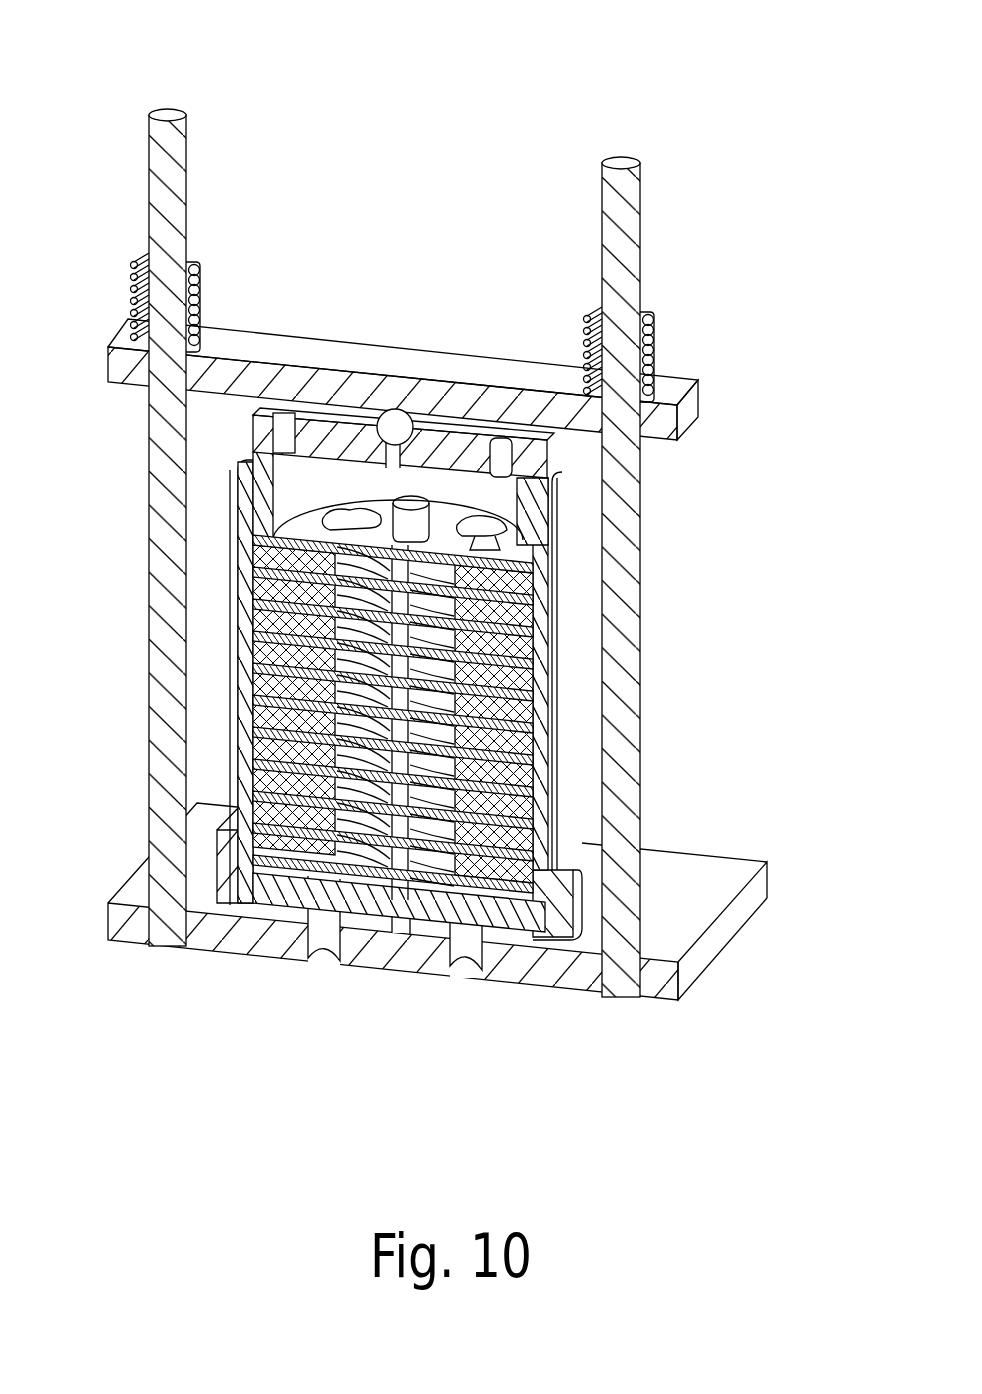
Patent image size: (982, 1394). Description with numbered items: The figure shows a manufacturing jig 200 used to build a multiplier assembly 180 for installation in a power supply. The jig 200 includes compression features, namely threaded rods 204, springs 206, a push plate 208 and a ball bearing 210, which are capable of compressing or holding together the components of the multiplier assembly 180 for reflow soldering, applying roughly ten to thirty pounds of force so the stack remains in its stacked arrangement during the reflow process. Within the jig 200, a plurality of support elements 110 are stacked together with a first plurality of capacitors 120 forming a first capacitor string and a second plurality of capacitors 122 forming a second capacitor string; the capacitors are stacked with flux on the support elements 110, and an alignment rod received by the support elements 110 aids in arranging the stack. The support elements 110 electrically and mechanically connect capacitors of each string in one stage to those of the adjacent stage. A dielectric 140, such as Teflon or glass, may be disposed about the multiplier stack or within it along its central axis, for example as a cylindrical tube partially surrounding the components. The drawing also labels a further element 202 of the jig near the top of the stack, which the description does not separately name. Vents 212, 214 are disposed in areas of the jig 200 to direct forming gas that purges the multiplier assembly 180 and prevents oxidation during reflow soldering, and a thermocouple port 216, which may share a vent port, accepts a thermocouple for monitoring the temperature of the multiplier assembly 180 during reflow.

The jig 200 is at (542, 106).
The threaded rods 204 is at (610, 227).
The springs 206 is at (587, 333).
The push plate 208 is at (450, 383).
The ball bearing 210 is at (412, 420).
The vent 214 is at (510, 462).
The cap 202 is at (420, 519).
The second plurality of capacitors 122 is at (265, 556).
The dielectric 140 is at (556, 688).
The first plurality of capacitors 120 is at (508, 777).
The support elements 110 is at (527, 862).
The vent 212 is at (425, 893).
The thermocouple port 216 is at (390, 912).
The multiplier assembly 180 is at (320, 922).